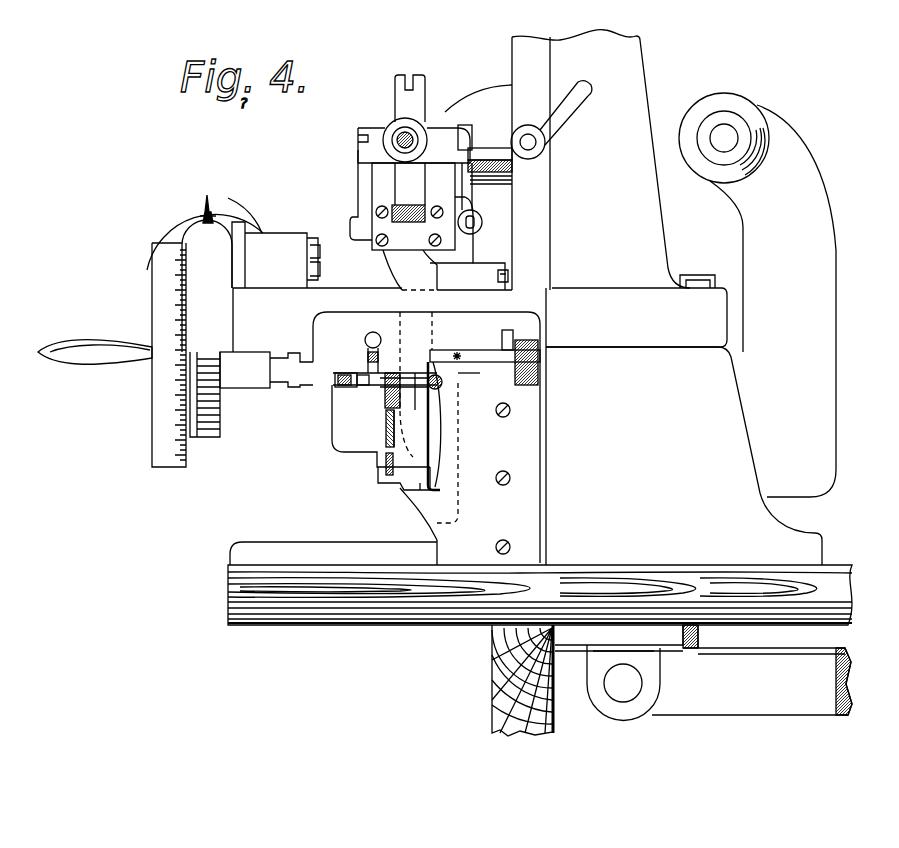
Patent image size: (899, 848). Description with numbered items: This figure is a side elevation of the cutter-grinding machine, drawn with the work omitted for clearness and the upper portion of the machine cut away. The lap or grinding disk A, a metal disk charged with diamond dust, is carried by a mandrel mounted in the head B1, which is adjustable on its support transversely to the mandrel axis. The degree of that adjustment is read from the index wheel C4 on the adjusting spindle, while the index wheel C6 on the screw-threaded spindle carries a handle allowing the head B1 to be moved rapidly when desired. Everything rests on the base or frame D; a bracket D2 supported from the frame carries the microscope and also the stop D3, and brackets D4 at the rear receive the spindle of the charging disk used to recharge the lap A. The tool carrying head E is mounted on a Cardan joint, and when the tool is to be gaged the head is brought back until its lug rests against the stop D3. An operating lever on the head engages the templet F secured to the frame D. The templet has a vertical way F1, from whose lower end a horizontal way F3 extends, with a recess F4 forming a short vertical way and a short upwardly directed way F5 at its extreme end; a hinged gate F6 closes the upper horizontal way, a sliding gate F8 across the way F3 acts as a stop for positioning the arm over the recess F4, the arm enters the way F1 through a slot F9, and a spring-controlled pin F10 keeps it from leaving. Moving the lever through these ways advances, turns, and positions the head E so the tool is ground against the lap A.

The lap or grinding disk A is at (482, 94).
The head B1 is at (503, 247).
The index wheel C4 is at (173, 214).
The index wheel C6 is at (158, 392).
The base or frame D is at (684, 426).
The bracket D2 is at (619, 188).
The stop D3 is at (486, 158).
The brackets D4 is at (757, 295).
The tool carrying head E is at (385, 183).
The templet or guide F is at (426, 437).
The vertical slot or guide-way F1 is at (440, 428).
The second horizontal way F3 is at (336, 380).
The depression or recess F4 is at (387, 405).
The short upwardly directed way F5 is at (513, 328).
The gate F6 is at (447, 354).
The sliding gate F8 is at (382, 352).
The slot F9 is at (418, 481).
The spring-controlled pin F10 is at (388, 477).